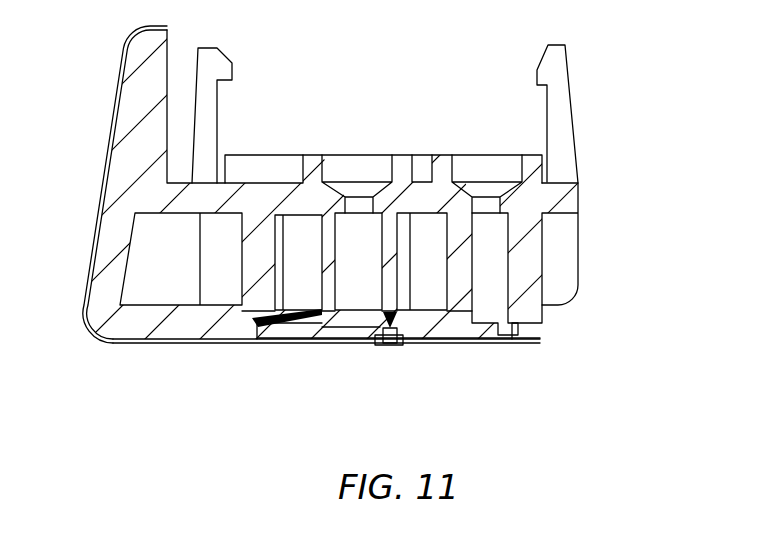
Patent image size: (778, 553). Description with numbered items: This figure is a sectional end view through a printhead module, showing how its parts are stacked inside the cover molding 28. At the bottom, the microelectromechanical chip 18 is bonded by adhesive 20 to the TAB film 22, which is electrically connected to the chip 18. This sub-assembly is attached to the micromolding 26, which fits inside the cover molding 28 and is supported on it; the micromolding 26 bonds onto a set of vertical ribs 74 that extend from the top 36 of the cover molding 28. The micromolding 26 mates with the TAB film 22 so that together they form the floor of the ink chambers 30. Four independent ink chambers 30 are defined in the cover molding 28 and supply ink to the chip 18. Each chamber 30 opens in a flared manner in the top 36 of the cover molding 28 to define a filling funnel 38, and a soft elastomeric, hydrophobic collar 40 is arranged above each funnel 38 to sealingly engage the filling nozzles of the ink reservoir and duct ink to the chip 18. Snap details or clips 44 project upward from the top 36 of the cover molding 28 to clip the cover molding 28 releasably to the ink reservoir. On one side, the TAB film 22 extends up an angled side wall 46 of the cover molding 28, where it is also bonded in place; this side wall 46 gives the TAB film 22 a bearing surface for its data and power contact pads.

The microelectromechanical (Memjet) chip 18 is at (398, 345).
The adhesive 20 is at (392, 345).
The Tape Automated Bond (TAB) film 22 is at (189, 344).
The micromolding 26 is at (530, 331).
The cover molding 28 is at (599, 204).
The ink chambers 30 is at (428, 272).
The top of the cover molding 36 is at (233, 173).
The filling funnels 38 is at (378, 183).
The elastomeric hydrophobic collar 40 is at (310, 168).
The snap details or clips 44 is at (210, 68).
The angled side wall 46 is at (140, 195).
The vertical ribs 74 is at (393, 292).